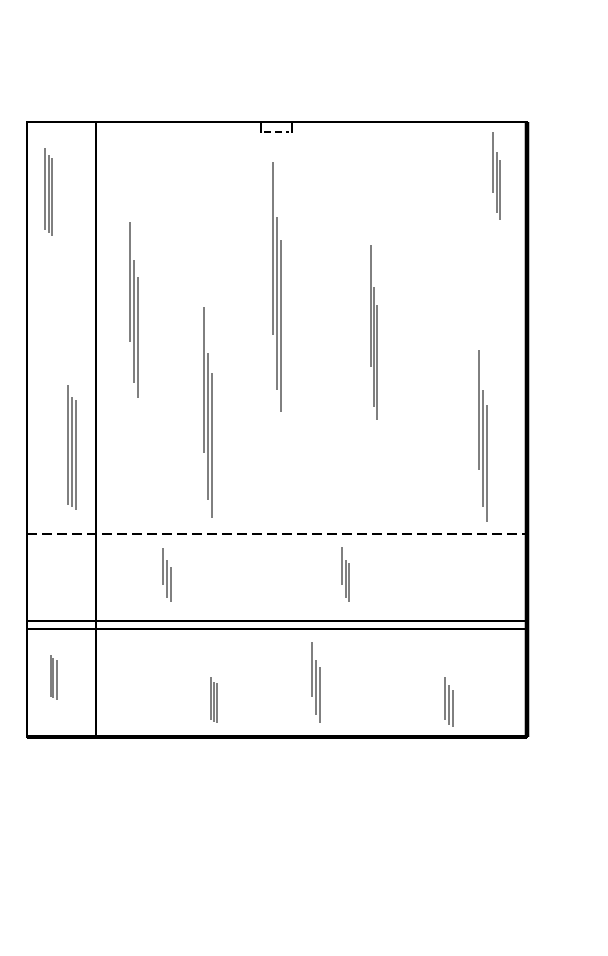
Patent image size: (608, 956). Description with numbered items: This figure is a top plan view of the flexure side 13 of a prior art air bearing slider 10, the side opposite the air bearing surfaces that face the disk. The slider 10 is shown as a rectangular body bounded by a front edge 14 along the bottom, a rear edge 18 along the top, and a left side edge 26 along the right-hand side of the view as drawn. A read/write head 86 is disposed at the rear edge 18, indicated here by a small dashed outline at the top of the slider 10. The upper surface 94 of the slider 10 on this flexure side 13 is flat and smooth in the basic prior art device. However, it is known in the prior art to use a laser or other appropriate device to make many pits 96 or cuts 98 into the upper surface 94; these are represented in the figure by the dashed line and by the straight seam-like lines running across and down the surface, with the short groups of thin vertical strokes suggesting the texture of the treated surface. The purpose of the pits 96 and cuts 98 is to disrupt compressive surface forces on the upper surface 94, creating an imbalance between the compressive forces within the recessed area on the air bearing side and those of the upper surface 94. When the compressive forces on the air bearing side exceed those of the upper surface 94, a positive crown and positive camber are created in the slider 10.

The air bearing slider 10 is at (509, 70).
The flexure side 13 is at (478, 247).
The front edge 14 is at (342, 738).
The rear edge 18 is at (432, 122).
The left side edge 26 is at (530, 325).
The read/write head 86 is at (278, 118).
The upper surface 94 is at (326, 404).
The pits 96 is at (267, 533).
The cuts 98 is at (97, 230).